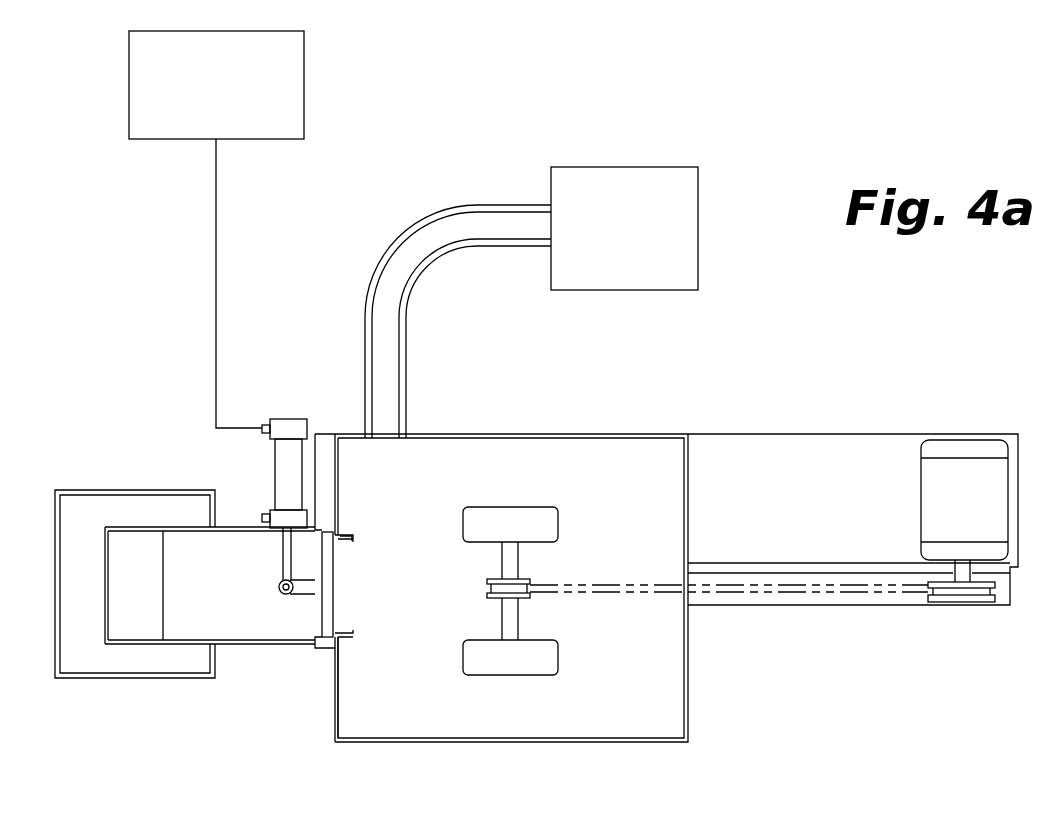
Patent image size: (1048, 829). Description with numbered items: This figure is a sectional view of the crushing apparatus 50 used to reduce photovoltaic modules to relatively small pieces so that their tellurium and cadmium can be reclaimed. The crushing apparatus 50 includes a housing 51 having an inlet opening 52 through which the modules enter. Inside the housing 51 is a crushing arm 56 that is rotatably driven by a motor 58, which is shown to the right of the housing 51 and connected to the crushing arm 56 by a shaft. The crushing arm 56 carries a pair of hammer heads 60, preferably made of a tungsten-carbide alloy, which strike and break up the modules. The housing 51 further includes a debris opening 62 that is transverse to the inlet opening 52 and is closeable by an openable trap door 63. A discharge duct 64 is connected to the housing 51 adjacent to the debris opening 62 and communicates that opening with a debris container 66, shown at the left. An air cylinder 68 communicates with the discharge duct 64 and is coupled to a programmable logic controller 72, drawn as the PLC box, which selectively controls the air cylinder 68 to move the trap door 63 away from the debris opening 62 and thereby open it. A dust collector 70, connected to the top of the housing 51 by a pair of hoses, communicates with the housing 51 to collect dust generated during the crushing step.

The crushing apparatus 50 is at (690, 505).
The housing 51 is at (641, 437).
The inlet opening 52 is at (583, 447).
The crushing arm 56 is at (498, 560).
The motor 58 is at (962, 437).
The hammer heads 60 is at (483, 507).
The debris opening 62 is at (349, 557).
The trap door 63 is at (320, 618).
The discharge duct 64 is at (240, 525).
The debris container 66 is at (112, 665).
The air cylinder 68 is at (288, 419).
The dust collector 70 is at (623, 167).
The programmable logic controller 72 is at (304, 68).